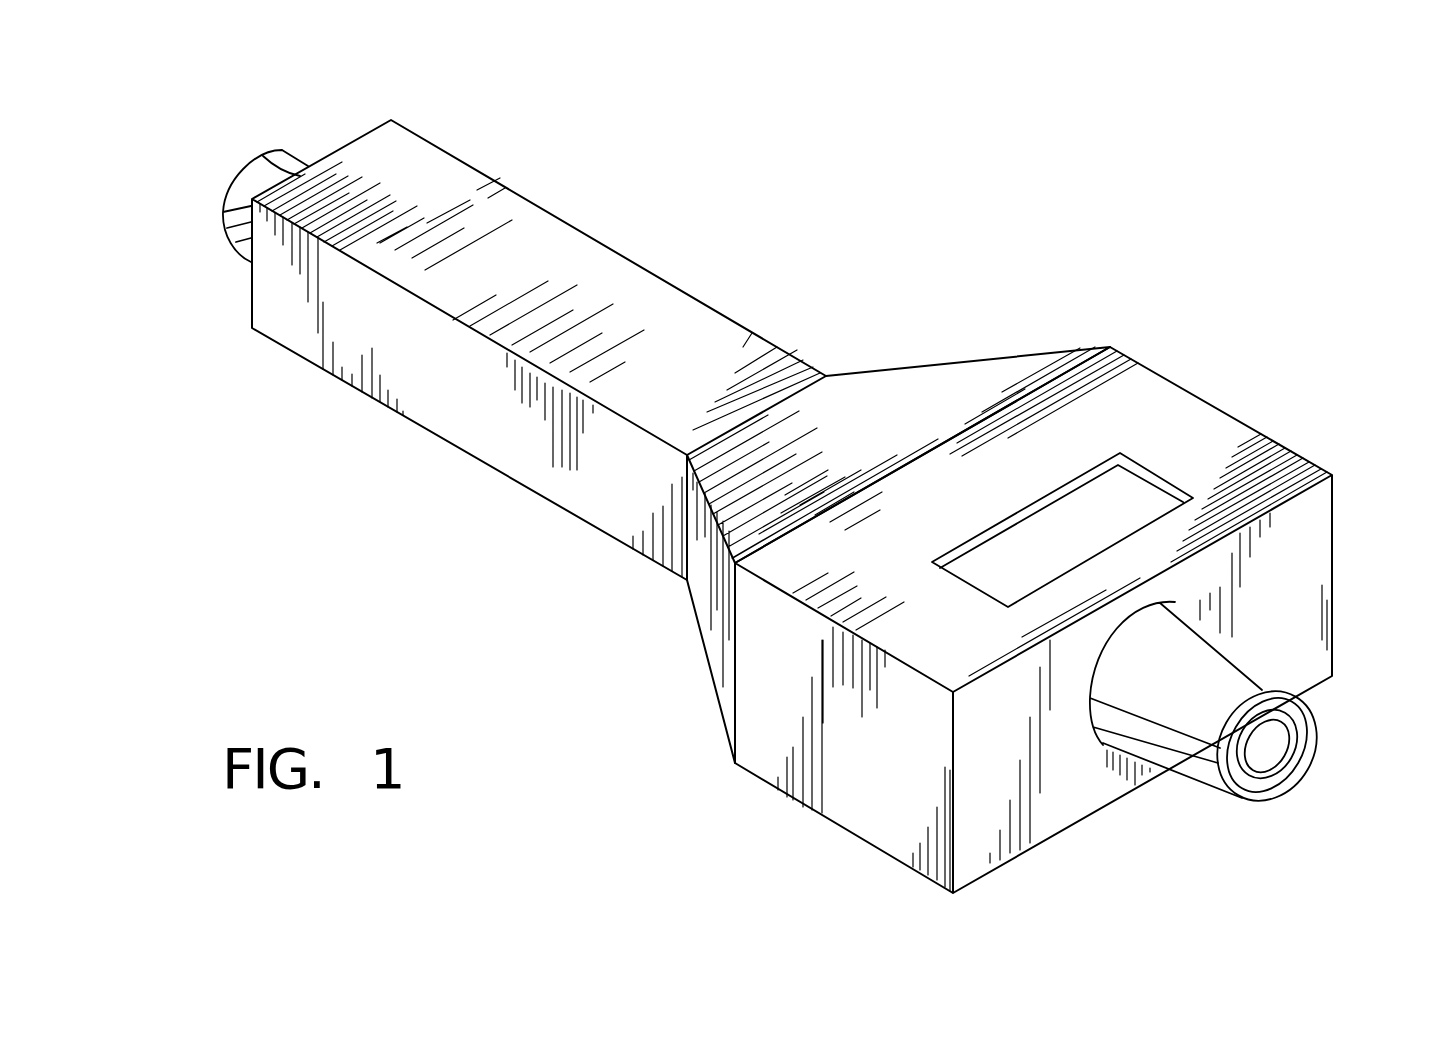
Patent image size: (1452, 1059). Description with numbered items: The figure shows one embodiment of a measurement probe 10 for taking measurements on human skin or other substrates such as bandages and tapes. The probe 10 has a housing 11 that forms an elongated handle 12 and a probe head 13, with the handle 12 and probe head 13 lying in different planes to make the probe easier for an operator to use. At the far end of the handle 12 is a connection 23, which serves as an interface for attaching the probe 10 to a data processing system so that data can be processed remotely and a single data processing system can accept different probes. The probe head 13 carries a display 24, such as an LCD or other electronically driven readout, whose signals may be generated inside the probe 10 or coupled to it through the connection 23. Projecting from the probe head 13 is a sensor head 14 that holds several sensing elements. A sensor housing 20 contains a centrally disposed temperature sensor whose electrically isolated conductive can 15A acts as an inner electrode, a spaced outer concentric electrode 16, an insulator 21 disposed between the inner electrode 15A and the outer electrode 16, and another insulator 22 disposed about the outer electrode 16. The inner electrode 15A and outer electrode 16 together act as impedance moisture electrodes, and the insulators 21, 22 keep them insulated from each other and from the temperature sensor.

The probe 10 is at (960, 130).
The handle 12 is at (522, 197).
The connection 23 is at (222, 227).
The housing 11 is at (907, 363).
The probe head 13 is at (1153, 395).
The display 24 is at (1180, 482).
The sensor head 14 is at (1260, 652).
The sensor housing 20 is at (1188, 767).
The insulator 22 is at (1260, 795).
The outer electrode 16 is at (1283, 773).
The insulator 21 is at (1290, 747).
The conductive housing or can 15A is at (1268, 728).